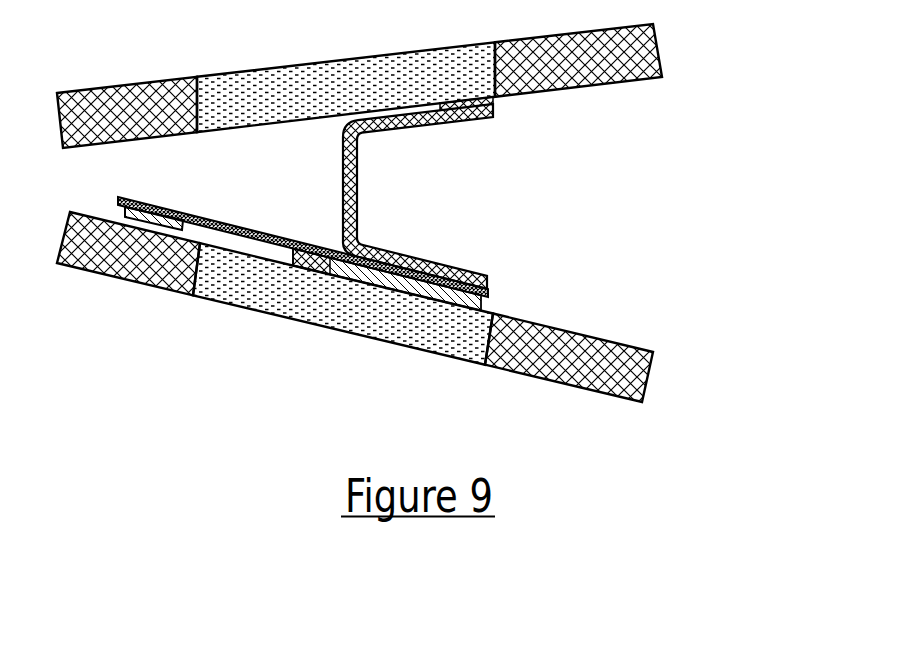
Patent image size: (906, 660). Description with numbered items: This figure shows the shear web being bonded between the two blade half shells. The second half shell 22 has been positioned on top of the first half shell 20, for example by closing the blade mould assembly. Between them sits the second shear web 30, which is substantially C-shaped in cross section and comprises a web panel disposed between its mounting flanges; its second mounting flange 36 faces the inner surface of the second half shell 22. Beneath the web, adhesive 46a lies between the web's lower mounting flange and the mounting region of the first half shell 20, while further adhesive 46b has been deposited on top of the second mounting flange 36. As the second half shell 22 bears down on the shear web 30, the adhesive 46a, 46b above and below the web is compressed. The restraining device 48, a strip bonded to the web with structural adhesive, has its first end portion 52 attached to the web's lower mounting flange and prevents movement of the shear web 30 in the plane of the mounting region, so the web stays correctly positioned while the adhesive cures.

The first half shell 20 is at (666, 372).
The second half shell 22 is at (696, 47).
The second shear web 30 is at (374, 186).
The second mounting flange 36 is at (453, 120).
The adhesive 46a is at (425, 250).
The further adhesive 46b is at (488, 106).
The restraining device 48 is at (249, 228).
The first end portion 52 is at (483, 297).